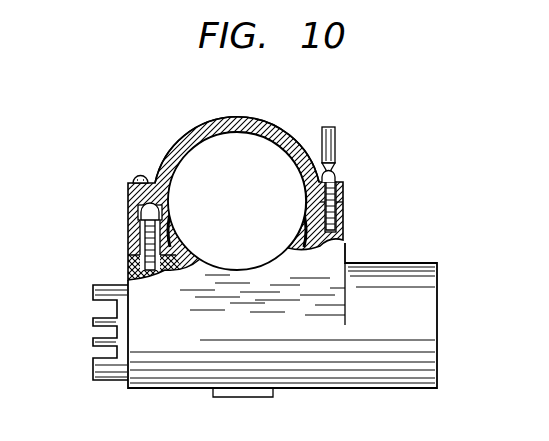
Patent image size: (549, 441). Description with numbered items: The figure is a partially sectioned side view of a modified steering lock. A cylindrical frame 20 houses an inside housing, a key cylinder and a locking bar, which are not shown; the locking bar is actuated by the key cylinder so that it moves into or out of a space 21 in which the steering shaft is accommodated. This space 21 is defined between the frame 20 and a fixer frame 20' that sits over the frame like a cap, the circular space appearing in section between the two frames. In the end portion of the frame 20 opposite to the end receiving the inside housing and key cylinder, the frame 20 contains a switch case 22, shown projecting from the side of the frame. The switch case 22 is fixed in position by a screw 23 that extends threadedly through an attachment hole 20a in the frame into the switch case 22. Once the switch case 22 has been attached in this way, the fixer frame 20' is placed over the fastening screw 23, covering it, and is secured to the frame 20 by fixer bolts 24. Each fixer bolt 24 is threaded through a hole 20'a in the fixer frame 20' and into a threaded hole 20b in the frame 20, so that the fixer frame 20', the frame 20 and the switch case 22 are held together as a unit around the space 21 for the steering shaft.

The cylindrical frame 20 is at (309, 257).
The fixer frame 20' is at (237, 166).
The attachment hole 20a is at (140, 212).
The holes 20'a is at (371, 191).
The threaded holes 20b is at (343, 220).
The space 21 is at (262, 160).
The switch case 22 is at (93, 297).
The screw 23 is at (140, 233).
The fixer bolts 24 is at (137, 180).